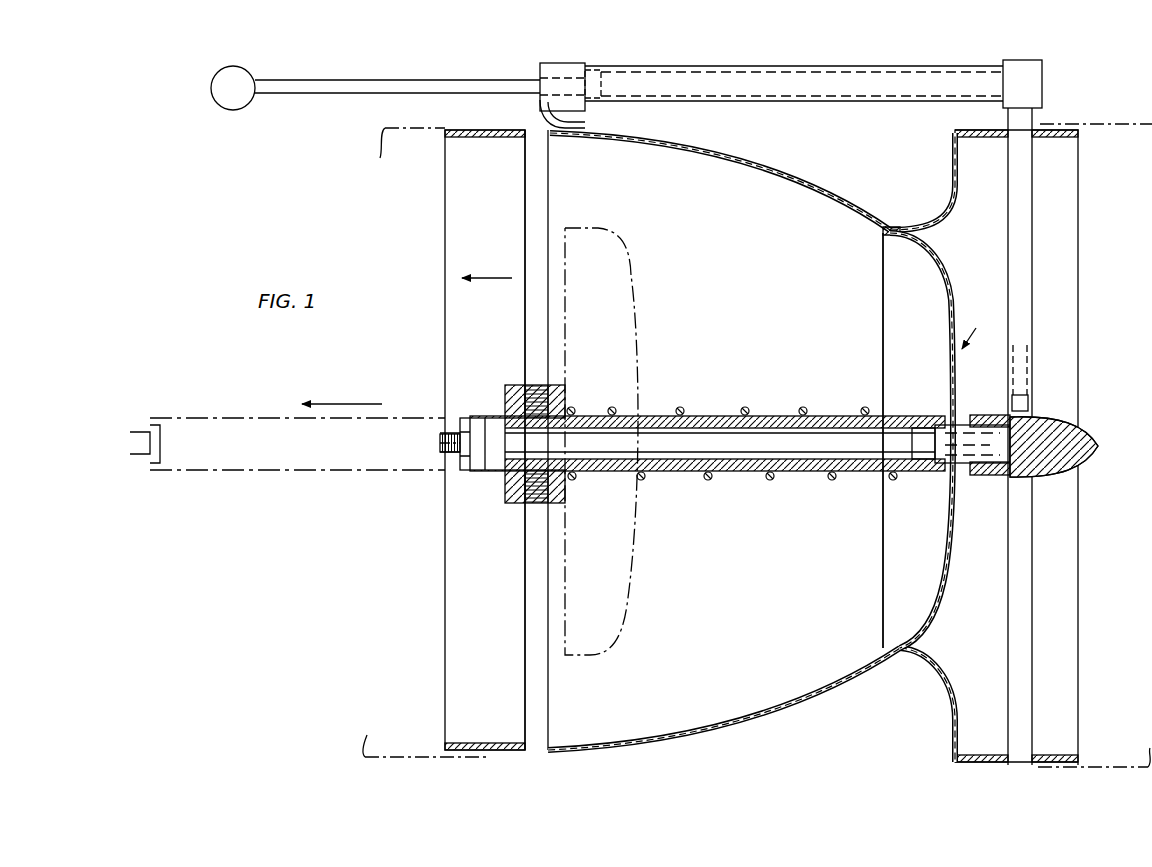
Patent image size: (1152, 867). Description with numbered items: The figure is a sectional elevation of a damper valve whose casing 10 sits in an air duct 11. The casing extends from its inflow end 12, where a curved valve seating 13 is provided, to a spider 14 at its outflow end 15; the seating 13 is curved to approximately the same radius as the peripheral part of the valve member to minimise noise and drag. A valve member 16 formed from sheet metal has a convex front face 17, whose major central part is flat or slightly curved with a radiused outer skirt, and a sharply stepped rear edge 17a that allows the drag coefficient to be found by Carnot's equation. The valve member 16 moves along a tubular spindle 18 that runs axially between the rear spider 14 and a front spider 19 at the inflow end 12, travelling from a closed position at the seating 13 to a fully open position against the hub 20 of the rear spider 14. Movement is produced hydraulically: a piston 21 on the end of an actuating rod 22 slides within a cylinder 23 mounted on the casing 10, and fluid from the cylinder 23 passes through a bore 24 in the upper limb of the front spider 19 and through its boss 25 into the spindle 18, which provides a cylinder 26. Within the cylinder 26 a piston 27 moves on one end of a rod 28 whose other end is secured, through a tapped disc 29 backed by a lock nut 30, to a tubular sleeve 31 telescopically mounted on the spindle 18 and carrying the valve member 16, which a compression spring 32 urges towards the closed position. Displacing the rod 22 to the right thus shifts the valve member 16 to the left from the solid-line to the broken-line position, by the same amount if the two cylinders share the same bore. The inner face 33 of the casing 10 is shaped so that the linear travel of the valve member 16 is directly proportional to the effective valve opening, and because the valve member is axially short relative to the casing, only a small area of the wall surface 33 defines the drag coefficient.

The casing 10 is at (830, 697).
The air duct 11 is at (1103, 124).
The inflow end 12 is at (1042, 295).
The valve seating 13 is at (882, 230).
The spider 14 is at (536, 201).
The outflow end 15 is at (487, 264).
The valve member 16 is at (976, 321).
The convex front face 17 is at (606, 233).
The sharply stepped rear edge 17a is at (880, 308).
The tubular spindle 18 is at (826, 415).
The spider 19 is at (1026, 170).
The hub 20 is at (516, 386).
The piston 21 is at (624, 103).
The actuating rod 22 is at (386, 92).
The cylinder 23 is at (802, 101).
The bore 24 is at (1022, 404).
The boss 25 is at (1082, 435).
The cylinder 26 is at (996, 456).
The piston 27 is at (926, 453).
The rod 28 is at (786, 445).
The tapped disc 29 is at (478, 472).
The lock nut 30 is at (151, 418).
The tubular sleeve 31 is at (218, 471).
The compression spring 32 is at (710, 480).
The inner face 33 is at (776, 177).